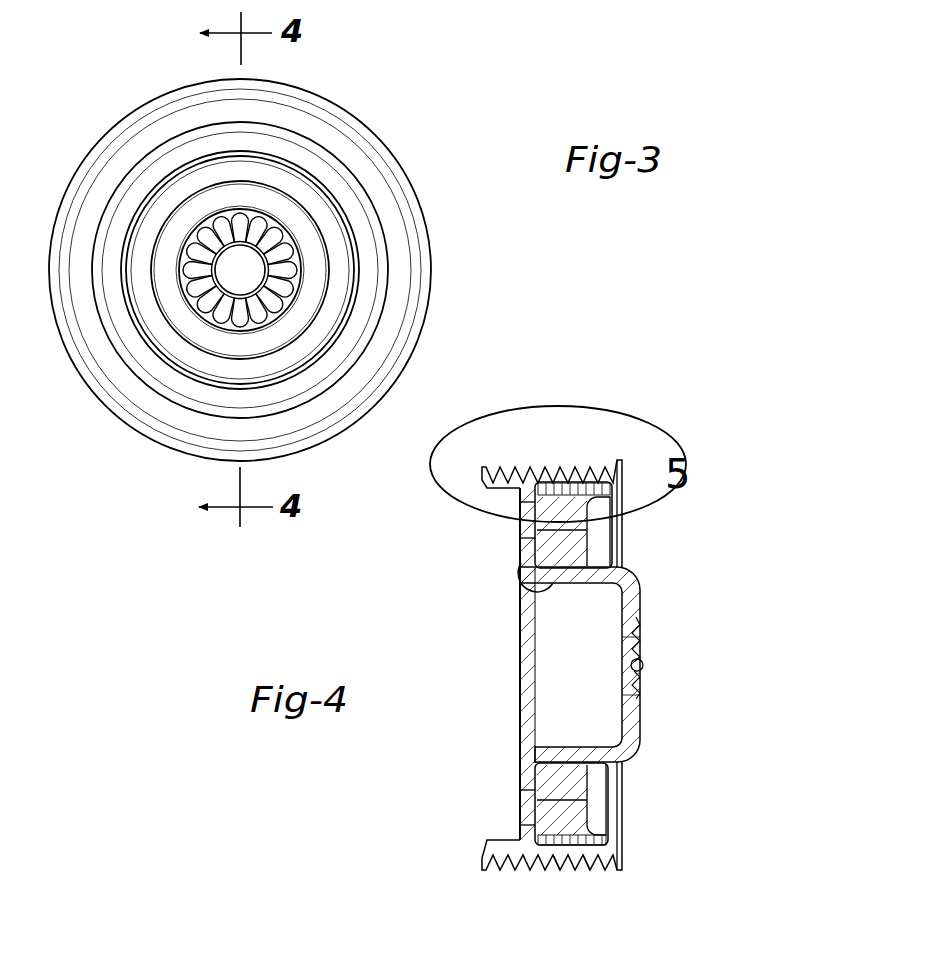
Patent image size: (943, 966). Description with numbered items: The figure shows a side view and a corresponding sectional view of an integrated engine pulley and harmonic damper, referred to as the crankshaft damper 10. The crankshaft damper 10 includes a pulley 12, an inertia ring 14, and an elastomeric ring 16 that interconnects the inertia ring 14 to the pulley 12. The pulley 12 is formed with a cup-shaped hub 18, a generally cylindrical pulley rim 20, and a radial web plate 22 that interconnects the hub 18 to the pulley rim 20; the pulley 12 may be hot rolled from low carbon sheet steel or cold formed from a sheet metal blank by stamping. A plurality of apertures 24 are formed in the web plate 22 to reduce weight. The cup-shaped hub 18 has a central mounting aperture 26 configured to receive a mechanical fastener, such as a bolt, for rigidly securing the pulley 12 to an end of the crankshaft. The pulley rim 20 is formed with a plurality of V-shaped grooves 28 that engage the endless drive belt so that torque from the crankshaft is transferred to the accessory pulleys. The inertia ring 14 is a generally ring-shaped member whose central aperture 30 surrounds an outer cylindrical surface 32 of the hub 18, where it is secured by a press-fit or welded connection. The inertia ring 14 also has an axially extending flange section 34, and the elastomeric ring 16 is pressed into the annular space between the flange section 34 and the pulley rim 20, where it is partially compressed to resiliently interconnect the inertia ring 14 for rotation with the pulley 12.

In FIG. 4, the crankshaft damper 10 is at (611, 696).
In FIG. 3, the pulley 12 is at (270, 198).
In FIG. 4, the pulley 12 is at (643, 712).
In FIG. 3, the inertia ring 14 is at (145, 193).
In FIG. 4, the inertia ring 14 is at (608, 800).
In FIG. 3, the elastomeric ring 16 is at (165, 143).
In FIG. 4, the elastomeric ring 16 is at (614, 843).
In FIG. 3, the cup-shaped hub 18 is at (317, 265).
In FIG. 4, the cup-shaped hub 18 is at (620, 576).
In FIG. 4, the pulley rim 20 is at (563, 852).
In FIG. 4, the radial web plate 22 is at (520, 783).
In FIG. 4, the apertures 24 is at (520, 528).
In FIG. 4, the central mounting aperture 26 is at (641, 651).
In FIG. 4, the V-shaped grooves 28 is at (590, 855).
In FIG. 4, the central aperture 30 is at (542, 571).
In FIG. 4, the outer cylindrical surface 32 is at (605, 565).
In FIG. 4, the flange section 34 is at (603, 829).